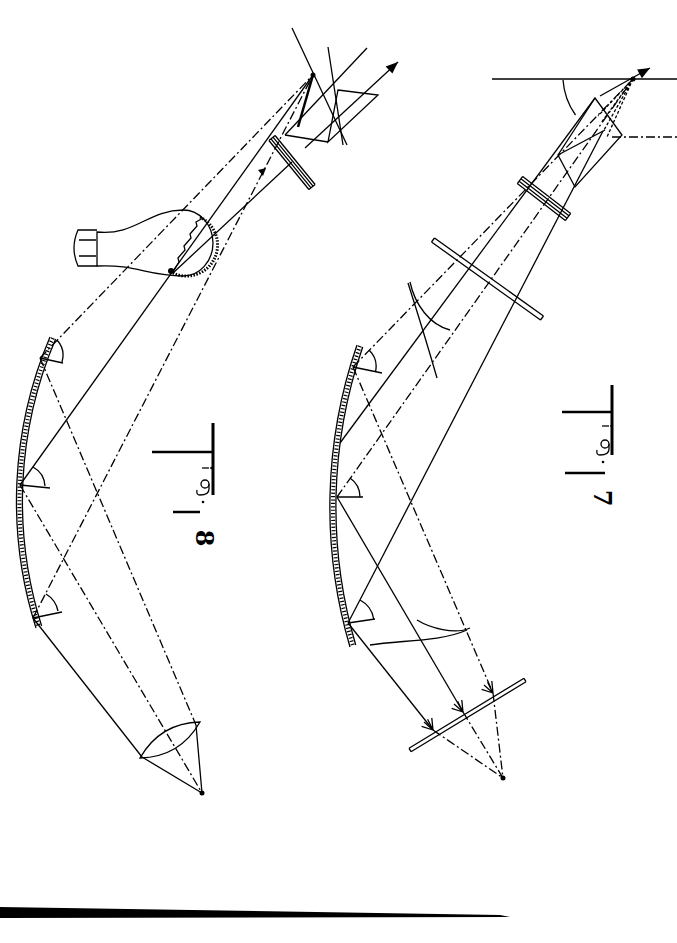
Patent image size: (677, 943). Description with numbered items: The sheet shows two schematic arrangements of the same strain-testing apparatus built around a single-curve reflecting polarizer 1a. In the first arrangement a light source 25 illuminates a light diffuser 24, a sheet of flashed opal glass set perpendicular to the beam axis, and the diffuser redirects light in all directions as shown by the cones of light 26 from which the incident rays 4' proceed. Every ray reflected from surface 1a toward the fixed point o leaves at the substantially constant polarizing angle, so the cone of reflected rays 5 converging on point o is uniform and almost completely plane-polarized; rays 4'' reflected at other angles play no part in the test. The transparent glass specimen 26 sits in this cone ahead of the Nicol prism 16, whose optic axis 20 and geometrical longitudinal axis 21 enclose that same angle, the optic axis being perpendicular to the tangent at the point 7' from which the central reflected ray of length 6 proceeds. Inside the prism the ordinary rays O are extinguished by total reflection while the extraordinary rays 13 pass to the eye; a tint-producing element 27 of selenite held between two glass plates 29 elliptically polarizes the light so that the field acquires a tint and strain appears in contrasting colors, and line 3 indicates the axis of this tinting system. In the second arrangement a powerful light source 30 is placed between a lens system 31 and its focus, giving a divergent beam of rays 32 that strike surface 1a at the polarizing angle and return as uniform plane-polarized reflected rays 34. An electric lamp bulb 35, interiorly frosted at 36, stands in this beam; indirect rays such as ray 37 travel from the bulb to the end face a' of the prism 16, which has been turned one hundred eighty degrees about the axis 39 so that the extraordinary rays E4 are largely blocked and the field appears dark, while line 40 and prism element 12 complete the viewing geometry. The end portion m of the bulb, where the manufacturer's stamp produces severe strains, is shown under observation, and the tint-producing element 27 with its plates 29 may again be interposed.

In FIG. 8, the reflecting polarizer 1a is at (25, 557).
In FIG. 7, the reflecting polarizer 1a is at (339, 546).
In FIG. 8, the optic axis 20 is at (296, 42).
In FIG. 7, the optic axis 20 is at (538, 78).
In FIG. 8, the reference line 40 is at (340, 89).
In FIG. 8, the Nicol prism 16 is at (295, 100).
In FIG. 7, the Nicol prism 16 is at (580, 128).
In FIG. 8, the prism 12 is at (361, 118).
In FIG. 8, the extraordinary rays E4 is at (392, 88).
In FIG. 8, the electric lamp bulb 35 is at (125, 238).
In FIG. 8, the indirect ray 37 is at (246, 208).
In FIG. 8, the axis of the solid angle 39 is at (229, 243).
In FIG. 8, the frosting film 36 is at (197, 279).
In FIG. 8, the end portion of the bulb m is at (214, 267).
In FIG. 8, the glass plates 29 is at (300, 190).
In FIG. 7, the glass plates 29 is at (571, 210).
In FIG. 8, the tint-producing element 27 is at (310, 190).
In FIG. 7, the tint-producing element 27 is at (568, 219).
In FIG. 8, the reflected rays 34 is at (89, 311).
In FIG. 8, the divergent beam of light rays 32 is at (96, 697).
In FIG. 8, the lens system 31 is at (147, 745).
In FIG. 8, the light source 30 is at (204, 794).
In FIG. 7, the geometrical longitudinal axis 21 is at (576, 139).
In FIG. 7, the ray bundle 13 is at (607, 126).
In FIG. 7, the optical axis 3 is at (631, 141).
In FIG. 7, the transparent glass specimen 26 is at (541, 320).
In FIG. 7, the reflected rays 5 is at (422, 296).
In FIG. 7, the wavefront 6 is at (437, 380).
In FIG. 7, the point on reflecting surface 7' is at (368, 514).
In FIG. 7, the non-useful reflected rays 4'' is at (418, 607).
In FIG. 7, the incident rays 4' is at (451, 621).
In FIG. 7, the light diffuser 24 is at (419, 752).
In FIG. 7, the light source 25 is at (506, 780).
In FIG. 8, the fixed point o is at (311, 76).
In FIG. 7, the ordinary rays O is at (629, 77).
In FIG. 8, the end face of the prism a' is at (337, 170).